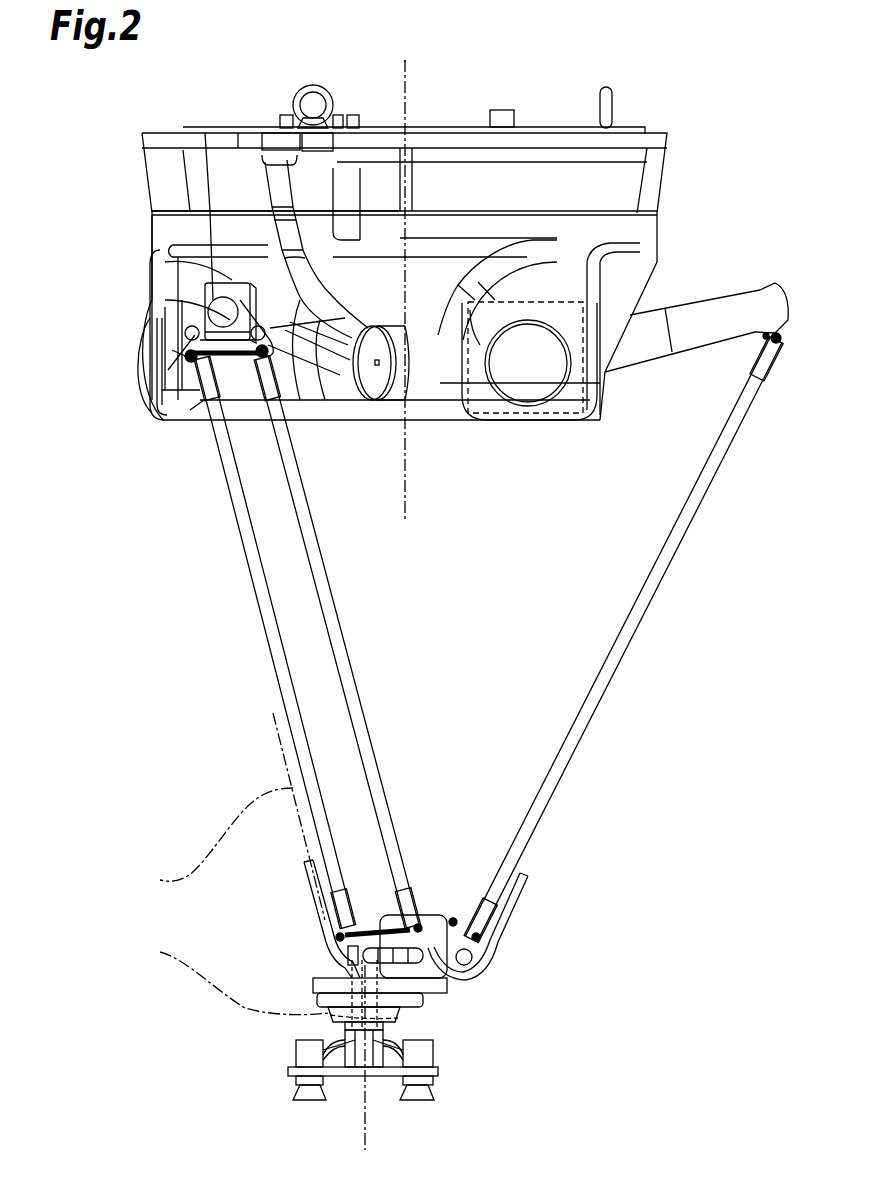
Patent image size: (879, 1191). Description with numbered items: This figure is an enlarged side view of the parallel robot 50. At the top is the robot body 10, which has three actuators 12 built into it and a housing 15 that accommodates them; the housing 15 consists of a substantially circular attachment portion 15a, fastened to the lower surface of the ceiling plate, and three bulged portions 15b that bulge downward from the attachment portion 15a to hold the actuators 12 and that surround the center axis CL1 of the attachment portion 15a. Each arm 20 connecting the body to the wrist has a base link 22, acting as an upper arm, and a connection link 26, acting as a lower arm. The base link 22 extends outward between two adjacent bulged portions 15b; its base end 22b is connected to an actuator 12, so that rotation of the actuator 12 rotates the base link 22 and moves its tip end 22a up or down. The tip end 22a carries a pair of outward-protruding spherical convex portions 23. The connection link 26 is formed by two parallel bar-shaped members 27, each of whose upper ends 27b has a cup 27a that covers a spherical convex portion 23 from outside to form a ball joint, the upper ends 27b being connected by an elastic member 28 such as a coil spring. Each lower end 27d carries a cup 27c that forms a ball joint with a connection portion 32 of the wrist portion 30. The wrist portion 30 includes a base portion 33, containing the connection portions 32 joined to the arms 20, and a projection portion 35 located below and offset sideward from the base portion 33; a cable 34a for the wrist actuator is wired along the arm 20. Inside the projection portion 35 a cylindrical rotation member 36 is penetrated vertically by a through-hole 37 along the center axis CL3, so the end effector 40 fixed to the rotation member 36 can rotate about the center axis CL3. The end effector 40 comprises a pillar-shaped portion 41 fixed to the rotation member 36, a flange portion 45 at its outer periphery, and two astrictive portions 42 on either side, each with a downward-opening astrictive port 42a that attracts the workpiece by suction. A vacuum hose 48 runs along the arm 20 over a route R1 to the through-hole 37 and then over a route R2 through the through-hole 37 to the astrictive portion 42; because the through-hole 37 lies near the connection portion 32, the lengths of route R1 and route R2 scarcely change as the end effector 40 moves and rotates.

The parallel robot 50 is at (678, 64).
The robot body 10 is at (695, 167).
The actuator 12 is at (480, 420).
The housing 15 is at (95, 195).
The attachment portion 15a is at (168, 140).
The bulged portion 15b is at (190, 303).
The arm 20 is at (238, 598).
The base link 22 is at (328, 345).
The tip end 22a is at (253, 335).
The base end 22b is at (380, 385).
The spherical convex portion 23 is at (190, 353).
The connection link 26 is at (392, 582).
The bar-shaped member 27 is at (272, 603).
The cup 27a is at (185, 334).
The upper end 27b is at (200, 380).
The cup 27c is at (473, 957).
The lower end 27d is at (338, 935).
The elastic member 28 is at (205, 400).
The wrist portion 30 is at (280, 967).
The connection portion 32 is at (452, 945).
The base portion 33 is at (420, 915).
The cable 34a is at (520, 885).
The projection portion 35 is at (320, 990).
The rotation member 36 is at (430, 1022).
The through-hole 37 is at (440, 1022).
The end effector 40 is at (250, 1061).
The pillar-shaped portion 41 is at (310, 1048).
The astrictive portion 42 is at (305, 1058).
The astrictive port 42a is at (310, 1100).
The flange portion 45 is at (335, 1075).
The vacuum hose 48 is at (305, 880).
The center axis CL1 is at (415, 500).
The center axis CL3 is at (365, 1145).
The route R1 is at (225, 816).
The route R2 is at (227, 978).